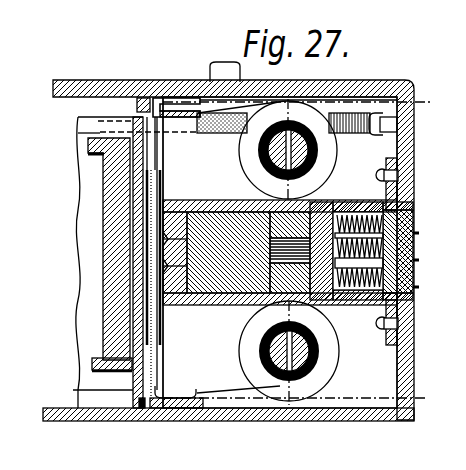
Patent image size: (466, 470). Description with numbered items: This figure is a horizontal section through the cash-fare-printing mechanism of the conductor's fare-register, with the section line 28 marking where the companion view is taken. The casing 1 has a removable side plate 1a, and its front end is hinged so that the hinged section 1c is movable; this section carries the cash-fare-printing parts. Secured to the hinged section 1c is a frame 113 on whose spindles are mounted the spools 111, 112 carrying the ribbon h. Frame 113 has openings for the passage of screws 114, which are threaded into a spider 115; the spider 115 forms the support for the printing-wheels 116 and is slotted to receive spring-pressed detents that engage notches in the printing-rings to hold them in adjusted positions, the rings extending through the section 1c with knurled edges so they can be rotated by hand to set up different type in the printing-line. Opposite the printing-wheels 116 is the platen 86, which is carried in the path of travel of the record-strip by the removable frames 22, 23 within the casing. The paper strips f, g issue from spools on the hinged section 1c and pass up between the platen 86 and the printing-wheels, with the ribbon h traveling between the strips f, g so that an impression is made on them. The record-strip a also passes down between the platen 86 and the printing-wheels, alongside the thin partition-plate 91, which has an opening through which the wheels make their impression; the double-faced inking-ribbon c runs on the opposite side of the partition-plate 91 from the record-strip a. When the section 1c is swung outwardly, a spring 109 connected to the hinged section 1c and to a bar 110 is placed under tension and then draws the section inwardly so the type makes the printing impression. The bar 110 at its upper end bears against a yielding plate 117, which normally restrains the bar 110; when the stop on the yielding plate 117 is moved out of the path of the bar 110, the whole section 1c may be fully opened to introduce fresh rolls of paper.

The casing 1 is at (68, 81).
The side plate 1a is at (117, 421).
The hinged section 1c is at (414, 138).
The frame-piece 22 is at (90, 154).
The frame 23 is at (92, 364).
The section line 28 is at (313, 251).
The platen 86 is at (110, 255).
The partition-plate 91 is at (143, 422).
The spring 109 is at (390, 96).
The bar 110 is at (183, 100).
The spool 111 is at (330, 157).
The spool 112 is at (330, 368).
The frame 113 is at (280, 252).
The screws 114 is at (308, 201).
The spider 115 is at (231, 217).
The printing-wheels 116 is at (416, 226).
The yielding plate 117 is at (366, 112).
The record-strip a is at (132, 322).
The inking-ribbon c is at (147, 370).
The strip f is at (150, 340).
The strip g is at (158, 323).
The ribbon h is at (158, 152).